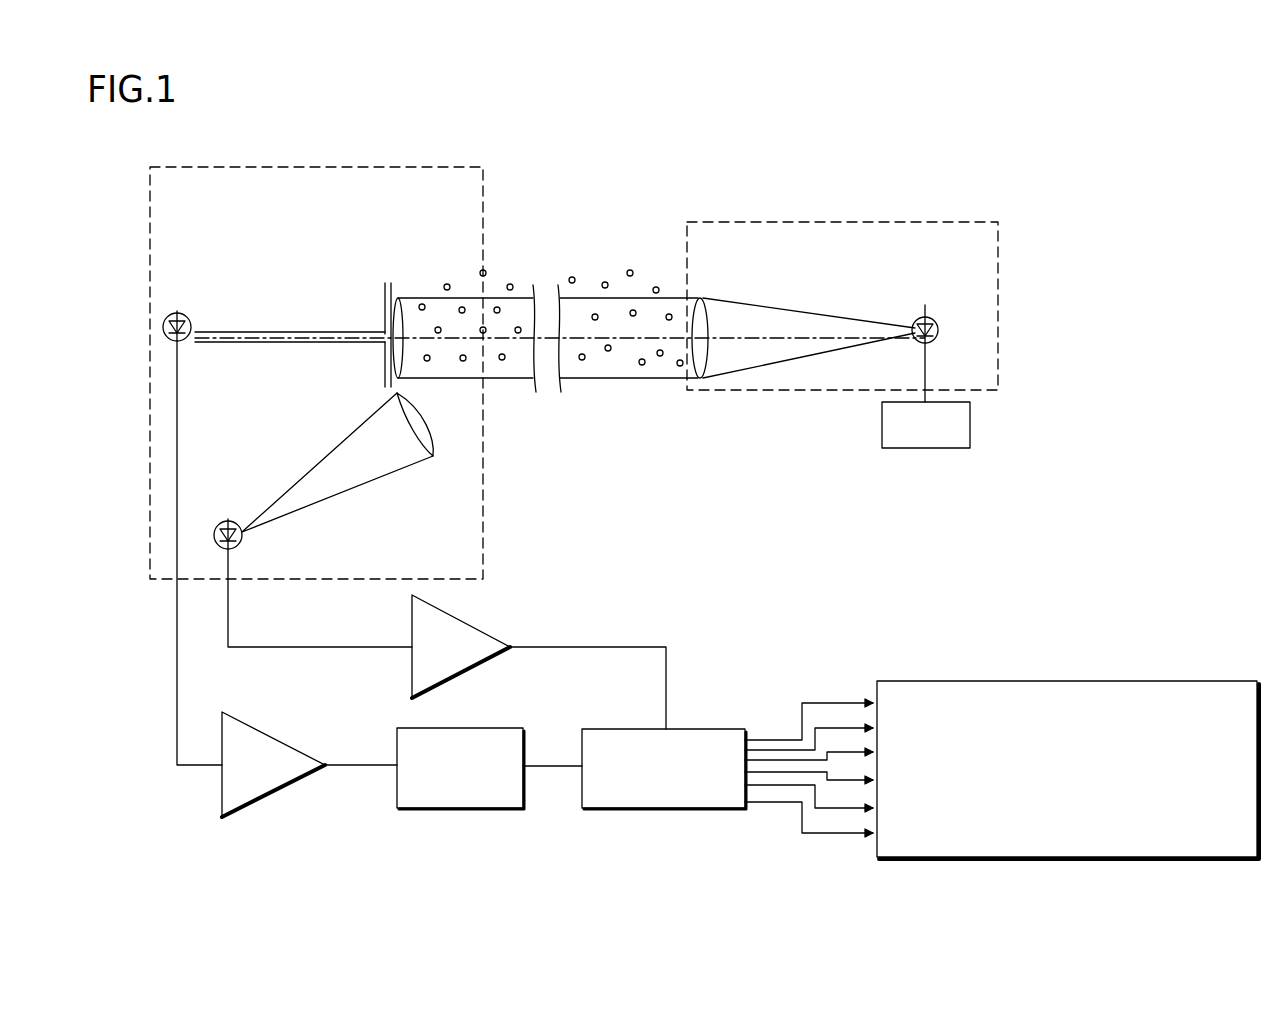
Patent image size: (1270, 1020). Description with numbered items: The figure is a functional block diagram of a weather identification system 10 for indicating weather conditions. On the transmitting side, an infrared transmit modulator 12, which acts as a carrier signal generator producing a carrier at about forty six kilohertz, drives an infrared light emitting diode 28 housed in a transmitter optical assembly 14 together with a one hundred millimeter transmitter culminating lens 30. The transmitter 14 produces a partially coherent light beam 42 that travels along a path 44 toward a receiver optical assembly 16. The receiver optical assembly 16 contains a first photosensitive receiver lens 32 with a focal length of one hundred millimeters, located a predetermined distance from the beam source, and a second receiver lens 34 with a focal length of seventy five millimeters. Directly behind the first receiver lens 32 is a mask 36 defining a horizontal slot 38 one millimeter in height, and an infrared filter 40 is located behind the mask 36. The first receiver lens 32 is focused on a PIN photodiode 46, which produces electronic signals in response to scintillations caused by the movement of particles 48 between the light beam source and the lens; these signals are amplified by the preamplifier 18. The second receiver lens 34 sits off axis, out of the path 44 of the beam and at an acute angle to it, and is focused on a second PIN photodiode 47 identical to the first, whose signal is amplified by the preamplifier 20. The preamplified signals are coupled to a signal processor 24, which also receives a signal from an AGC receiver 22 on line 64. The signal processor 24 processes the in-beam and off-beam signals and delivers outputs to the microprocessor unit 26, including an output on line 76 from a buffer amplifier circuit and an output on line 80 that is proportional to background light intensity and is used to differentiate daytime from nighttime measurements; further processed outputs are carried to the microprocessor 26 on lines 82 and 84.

The weather identification system 10 is at (882, 168).
The infrared transmit modulator 12 is at (930, 440).
The transmitter optical assembly 14 is at (795, 222).
The receiver optical assembly 16 is at (297, 167).
The preamplification circuit 18 is at (262, 793).
The preamplification circuit 20 is at (482, 640).
The AGC receiver 22 is at (447, 808).
The signal processor 24 is at (643, 808).
The microprocessor unit 26 is at (1097, 848).
The infrared light emitting diode 28 is at (937, 320).
The transmitter culminating lens 30 is at (703, 325).
The first photosensitive receiver lens 32 is at (413, 310).
The second receiver lens 34 is at (425, 428).
The mask 36 is at (391, 285).
The horizontal slot 38 is at (395, 336).
The infrared filter 40 is at (385, 310).
The partially coherent light beam 42 is at (605, 380).
The path of the light beam 44 is at (593, 338).
The PIN photodiode 46 is at (193, 322).
The second PIN photodiode 47 is at (222, 522).
The particles 48 is at (633, 310).
The line 64 is at (835, 727).
The line 76 is at (808, 833).
The line 80 is at (850, 780).
The high channel output 82 is at (835, 808).
The low channel output 84 is at (790, 757).